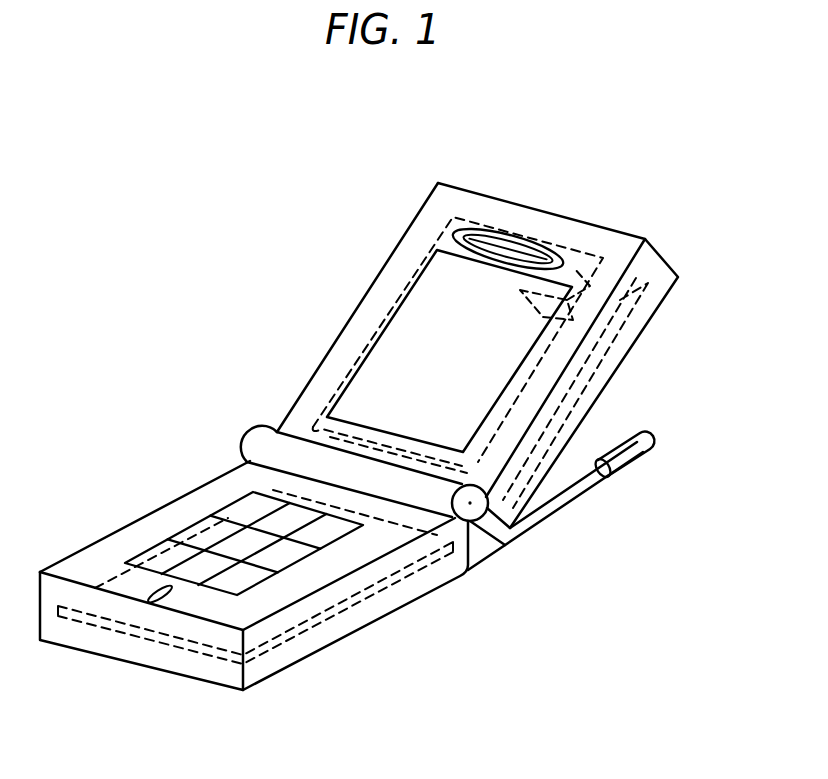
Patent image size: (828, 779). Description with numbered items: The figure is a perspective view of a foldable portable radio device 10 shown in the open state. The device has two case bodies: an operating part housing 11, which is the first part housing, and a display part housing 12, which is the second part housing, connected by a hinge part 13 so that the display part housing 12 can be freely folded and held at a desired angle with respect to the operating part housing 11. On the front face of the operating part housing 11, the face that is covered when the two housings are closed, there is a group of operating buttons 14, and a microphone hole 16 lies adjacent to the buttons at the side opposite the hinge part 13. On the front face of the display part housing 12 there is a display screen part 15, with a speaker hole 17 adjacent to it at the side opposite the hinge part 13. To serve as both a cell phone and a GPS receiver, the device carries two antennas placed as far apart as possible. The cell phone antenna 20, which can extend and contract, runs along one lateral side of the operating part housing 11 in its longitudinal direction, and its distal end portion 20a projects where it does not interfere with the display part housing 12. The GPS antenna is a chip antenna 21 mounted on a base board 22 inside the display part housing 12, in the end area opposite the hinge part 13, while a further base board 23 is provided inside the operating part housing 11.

The portable radio device 10 is at (461, 181).
The operating part housing 11 is at (145, 522).
The display part housing 12 is at (432, 213).
The hinge part 13 is at (273, 448).
The group of operating buttons 14 is at (278, 558).
The display screen part 15 is at (425, 293).
The microphone hole 16 is at (170, 600).
The speaker hole 17 is at (512, 243).
The antenna 20 is at (542, 512).
The distal end portion 20a is at (627, 463).
The chip antenna 21 is at (598, 262).
The base board 22 is at (641, 323).
The base board 23 is at (298, 633).